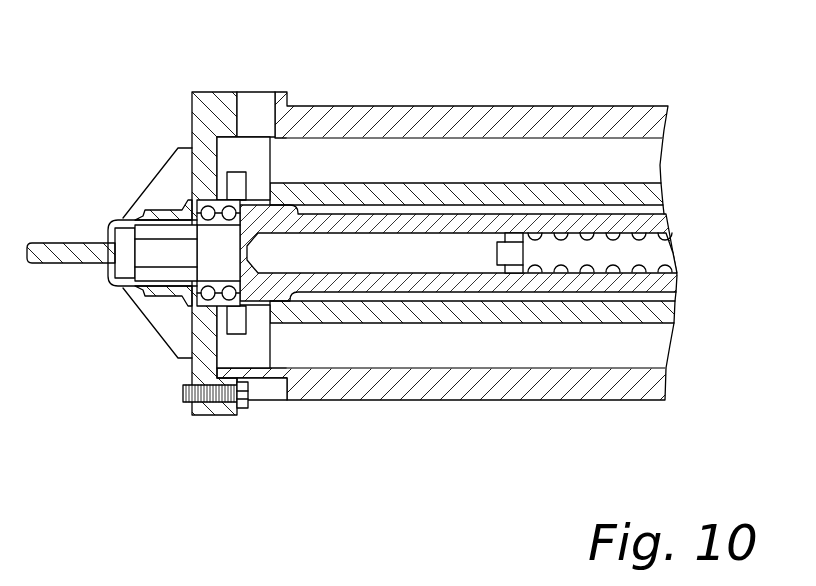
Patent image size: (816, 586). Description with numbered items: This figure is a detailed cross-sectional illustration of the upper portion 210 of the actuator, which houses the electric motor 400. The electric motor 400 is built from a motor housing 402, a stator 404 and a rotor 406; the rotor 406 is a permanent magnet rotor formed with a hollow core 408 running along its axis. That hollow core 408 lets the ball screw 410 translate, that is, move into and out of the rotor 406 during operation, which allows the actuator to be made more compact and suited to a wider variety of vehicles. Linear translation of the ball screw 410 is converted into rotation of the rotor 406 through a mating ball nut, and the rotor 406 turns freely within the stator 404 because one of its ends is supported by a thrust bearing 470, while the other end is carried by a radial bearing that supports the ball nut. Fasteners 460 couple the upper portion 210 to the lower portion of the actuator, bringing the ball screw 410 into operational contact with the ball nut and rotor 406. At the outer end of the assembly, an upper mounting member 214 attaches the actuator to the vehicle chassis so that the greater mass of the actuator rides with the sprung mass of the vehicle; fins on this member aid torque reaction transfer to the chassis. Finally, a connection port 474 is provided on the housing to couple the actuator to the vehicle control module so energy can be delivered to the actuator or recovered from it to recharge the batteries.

The electric motor 400 is at (378, 247).
The upper portion 210 is at (473, 280).
The upper mounting member 214 is at (133, 155).
The motor housing 402 is at (615, 105).
The stator 404 is at (437, 152).
The rotor 406 is at (470, 183).
The hollow core 408 is at (350, 258).
The ball screw 410 is at (672, 253).
The fasteners 460 is at (510, 265).
The thrust bearing 470 is at (208, 292).
The connection port 474 is at (252, 100).